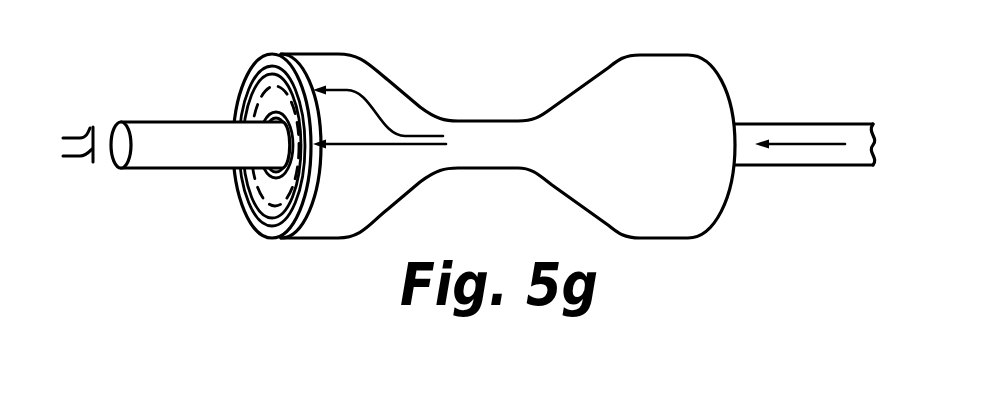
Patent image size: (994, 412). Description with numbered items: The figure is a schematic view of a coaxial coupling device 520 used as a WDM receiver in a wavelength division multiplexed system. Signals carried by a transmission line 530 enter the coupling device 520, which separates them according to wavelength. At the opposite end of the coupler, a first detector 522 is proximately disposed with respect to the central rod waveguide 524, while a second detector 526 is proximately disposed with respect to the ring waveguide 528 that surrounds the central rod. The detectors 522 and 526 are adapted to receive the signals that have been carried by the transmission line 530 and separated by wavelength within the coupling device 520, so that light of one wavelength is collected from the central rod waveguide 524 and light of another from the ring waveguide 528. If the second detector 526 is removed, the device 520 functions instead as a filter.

The coaxial coupling device 520 is at (486, 60).
The first detector 522 is at (82, 130).
The central rod waveguide 524 is at (175, 121).
The second detector 526 is at (243, 198).
The ring waveguide 528 is at (262, 68).
The transmission line 530 is at (830, 123).